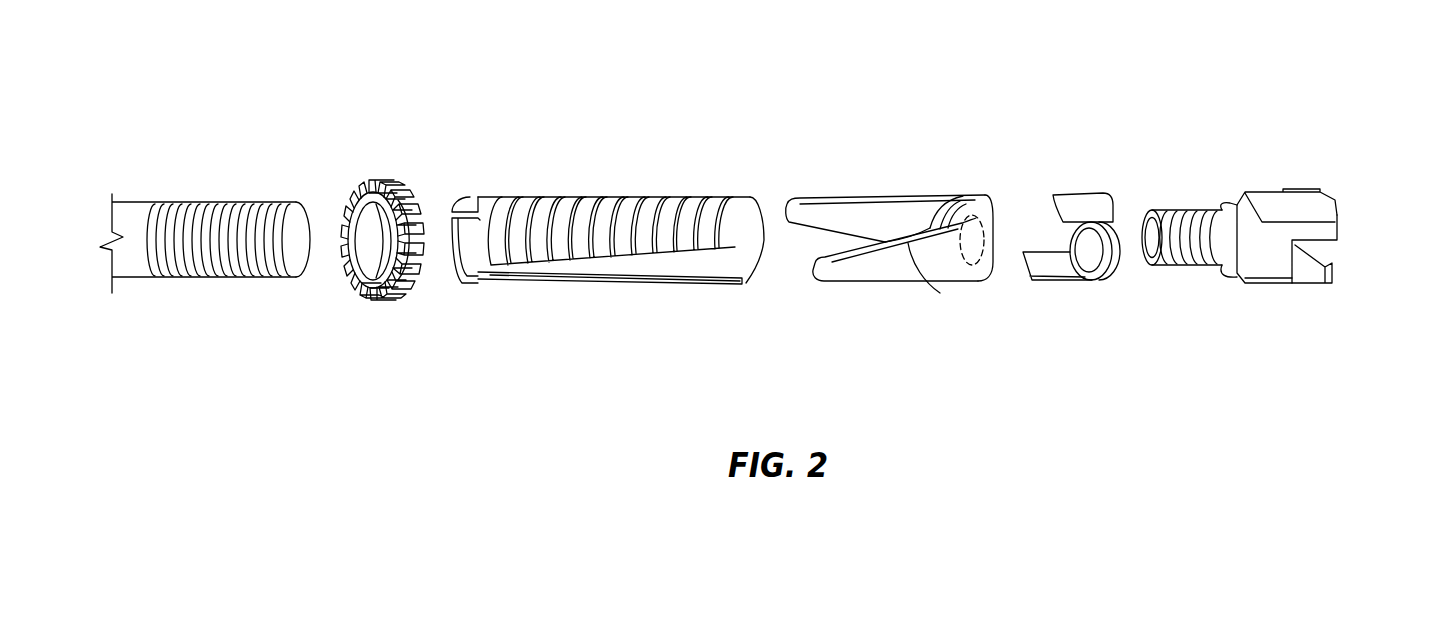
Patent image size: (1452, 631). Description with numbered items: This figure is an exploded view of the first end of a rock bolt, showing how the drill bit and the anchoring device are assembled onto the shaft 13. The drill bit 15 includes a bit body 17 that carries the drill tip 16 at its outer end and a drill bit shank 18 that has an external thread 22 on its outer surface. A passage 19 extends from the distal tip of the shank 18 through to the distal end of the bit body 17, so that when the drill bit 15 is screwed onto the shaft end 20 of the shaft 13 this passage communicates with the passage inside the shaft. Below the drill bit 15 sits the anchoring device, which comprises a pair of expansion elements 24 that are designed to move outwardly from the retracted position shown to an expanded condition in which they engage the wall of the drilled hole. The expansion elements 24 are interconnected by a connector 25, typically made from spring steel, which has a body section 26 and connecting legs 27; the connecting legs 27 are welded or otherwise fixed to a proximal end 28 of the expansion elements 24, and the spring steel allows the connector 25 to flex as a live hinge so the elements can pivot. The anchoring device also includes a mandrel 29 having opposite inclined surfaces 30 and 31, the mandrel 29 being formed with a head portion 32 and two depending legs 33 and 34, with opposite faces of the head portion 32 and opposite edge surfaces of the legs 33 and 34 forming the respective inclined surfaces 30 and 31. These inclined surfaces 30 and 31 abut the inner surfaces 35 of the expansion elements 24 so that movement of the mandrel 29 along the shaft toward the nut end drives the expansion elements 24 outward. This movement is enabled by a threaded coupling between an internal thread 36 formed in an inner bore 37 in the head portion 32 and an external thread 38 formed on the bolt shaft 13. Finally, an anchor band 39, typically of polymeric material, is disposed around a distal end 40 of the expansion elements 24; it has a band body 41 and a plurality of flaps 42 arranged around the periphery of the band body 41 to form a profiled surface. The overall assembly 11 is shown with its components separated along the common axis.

The clip 11 is at (924, 193).
The shaft 13 is at (247, 176).
The drill bit 15 is at (1323, 222).
The drill tip 16 is at (1300, 154).
The bit body 17 is at (1272, 283).
The drill bit shank 18 is at (1220, 204).
The passage 19 is at (1137, 212).
The shaft end 20 is at (312, 205).
The external thread 22 is at (1190, 266).
The expansion elements 24 is at (628, 207).
The connector 25 is at (1272, 194).
The body section 26 is at (1097, 273).
The connecting legs 27 is at (1092, 205).
The proximal end 28 is at (745, 208).
The mandrel 29 is at (1098, 193).
The inclined surface 30 is at (948, 215).
The inclined surface 31 is at (940, 293).
The head portion 32 is at (988, 216).
The leg 33 is at (818, 211).
The leg 34 is at (838, 277).
The inner surfaces 35 is at (688, 272).
The internal thread 36 is at (956, 222).
The inner bore 37 is at (1003, 233).
The external thread 38 is at (207, 205).
The anchor band 39 is at (400, 217).
The distal end 40 is at (497, 207).
The band body 41 is at (355, 282).
The flaps 42 is at (395, 298).